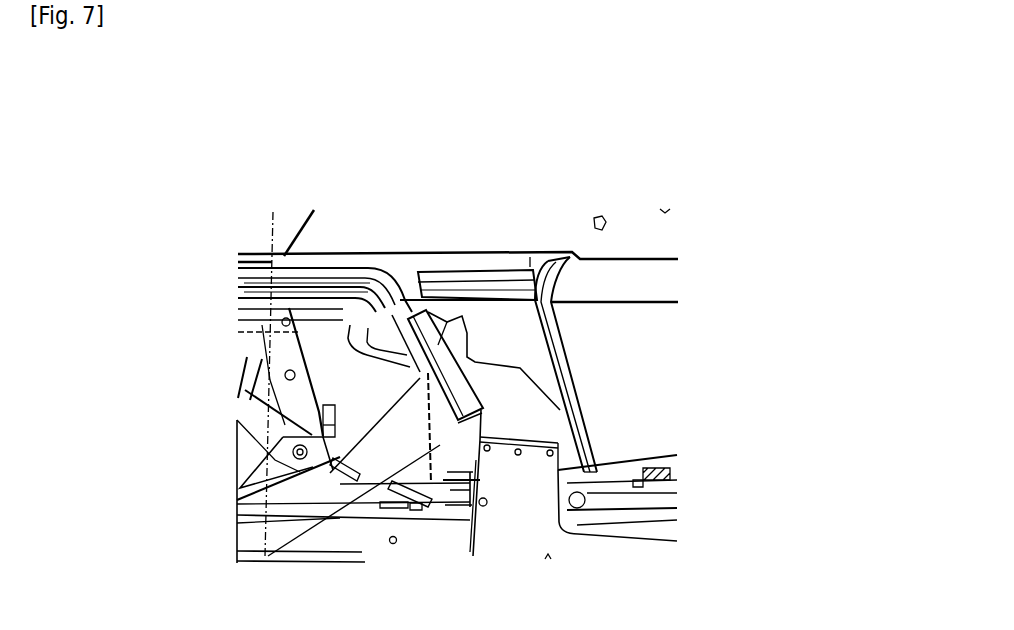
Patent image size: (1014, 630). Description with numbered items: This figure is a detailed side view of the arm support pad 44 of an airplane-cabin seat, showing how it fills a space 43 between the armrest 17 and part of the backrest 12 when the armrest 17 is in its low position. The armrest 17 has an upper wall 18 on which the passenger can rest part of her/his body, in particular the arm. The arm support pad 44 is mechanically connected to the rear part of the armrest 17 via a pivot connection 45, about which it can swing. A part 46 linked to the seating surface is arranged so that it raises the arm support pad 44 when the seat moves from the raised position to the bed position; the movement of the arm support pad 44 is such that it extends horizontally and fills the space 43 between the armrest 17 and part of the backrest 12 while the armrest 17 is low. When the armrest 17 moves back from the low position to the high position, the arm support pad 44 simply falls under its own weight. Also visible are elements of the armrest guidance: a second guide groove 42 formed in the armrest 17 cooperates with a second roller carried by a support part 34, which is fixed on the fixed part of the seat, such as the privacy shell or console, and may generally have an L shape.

The backrest 12 is at (645, 280).
The armrest 17 is at (238, 264).
The upper wall 18 is at (310, 280).
The support part 34 is at (547, 413).
The second guide groove 42 is at (240, 495).
The space 43 is at (449, 255).
The arm support pad 44 is at (481, 276).
The pivot connection 45 is at (392, 285).
The part linked to the seating surface 46 is at (448, 322).